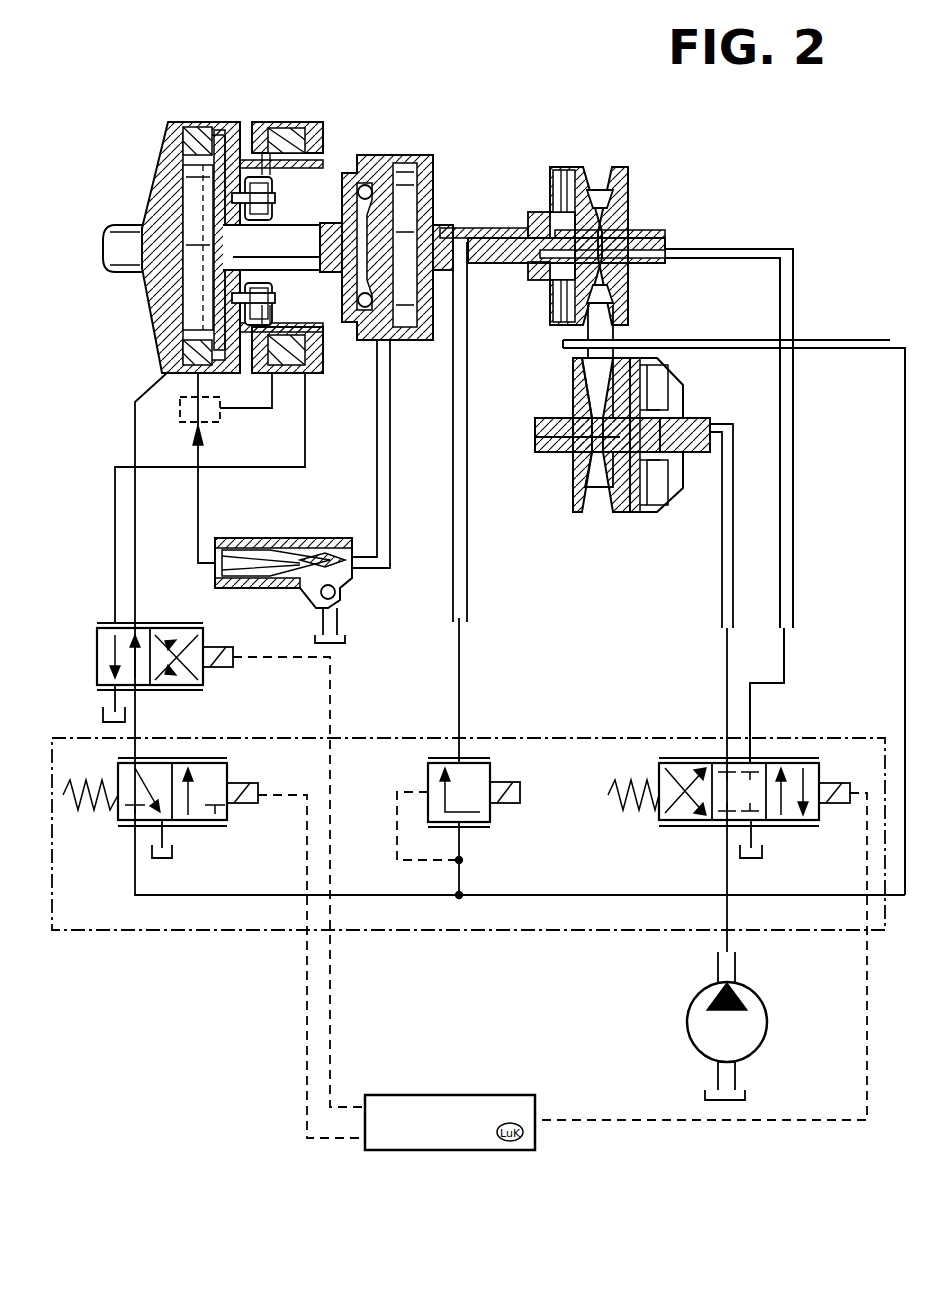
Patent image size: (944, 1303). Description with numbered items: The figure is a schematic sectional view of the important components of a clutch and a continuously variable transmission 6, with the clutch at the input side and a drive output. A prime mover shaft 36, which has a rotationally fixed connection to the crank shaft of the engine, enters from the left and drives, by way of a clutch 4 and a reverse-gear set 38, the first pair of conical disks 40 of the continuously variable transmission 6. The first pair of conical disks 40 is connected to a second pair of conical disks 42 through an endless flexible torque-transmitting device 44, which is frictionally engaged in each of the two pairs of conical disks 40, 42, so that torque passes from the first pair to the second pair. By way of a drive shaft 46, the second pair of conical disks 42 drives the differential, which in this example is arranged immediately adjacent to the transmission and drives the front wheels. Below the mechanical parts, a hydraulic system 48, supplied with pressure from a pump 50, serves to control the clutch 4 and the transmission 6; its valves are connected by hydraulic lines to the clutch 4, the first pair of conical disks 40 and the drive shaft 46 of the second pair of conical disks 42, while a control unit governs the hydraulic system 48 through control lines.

The clutch 4 is at (210, 122).
The continuously variable transmission 6 is at (478, 148).
The prime mover shaft 36 is at (133, 236).
The reverse-gear set 38 is at (292, 103).
The first pair of conical disks 40 is at (578, 182).
The second pair of conical disks 42 is at (580, 508).
The endless flexible torque-transmitting device 44 is at (600, 196).
The drive shaft 46 is at (697, 458).
The hydraulic system 48 is at (183, 915).
The pump 50 is at (705, 1028).